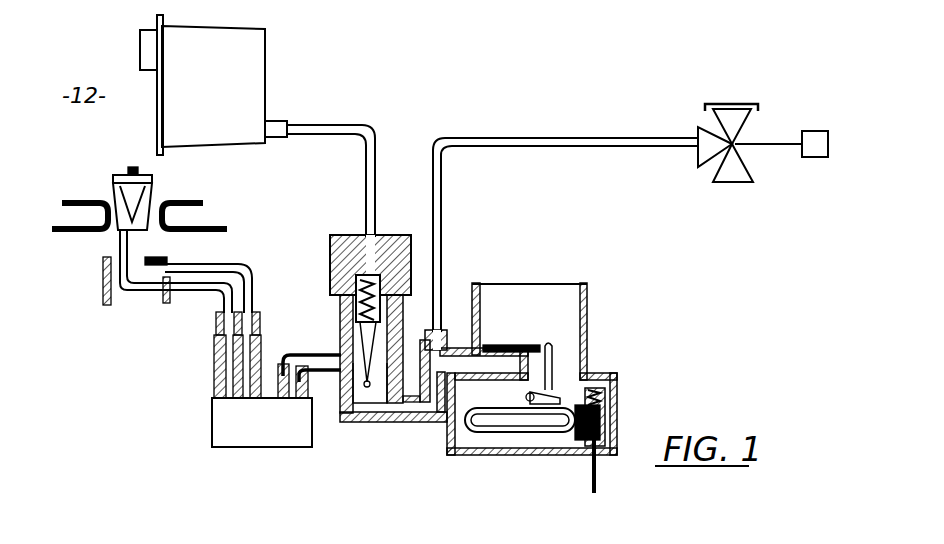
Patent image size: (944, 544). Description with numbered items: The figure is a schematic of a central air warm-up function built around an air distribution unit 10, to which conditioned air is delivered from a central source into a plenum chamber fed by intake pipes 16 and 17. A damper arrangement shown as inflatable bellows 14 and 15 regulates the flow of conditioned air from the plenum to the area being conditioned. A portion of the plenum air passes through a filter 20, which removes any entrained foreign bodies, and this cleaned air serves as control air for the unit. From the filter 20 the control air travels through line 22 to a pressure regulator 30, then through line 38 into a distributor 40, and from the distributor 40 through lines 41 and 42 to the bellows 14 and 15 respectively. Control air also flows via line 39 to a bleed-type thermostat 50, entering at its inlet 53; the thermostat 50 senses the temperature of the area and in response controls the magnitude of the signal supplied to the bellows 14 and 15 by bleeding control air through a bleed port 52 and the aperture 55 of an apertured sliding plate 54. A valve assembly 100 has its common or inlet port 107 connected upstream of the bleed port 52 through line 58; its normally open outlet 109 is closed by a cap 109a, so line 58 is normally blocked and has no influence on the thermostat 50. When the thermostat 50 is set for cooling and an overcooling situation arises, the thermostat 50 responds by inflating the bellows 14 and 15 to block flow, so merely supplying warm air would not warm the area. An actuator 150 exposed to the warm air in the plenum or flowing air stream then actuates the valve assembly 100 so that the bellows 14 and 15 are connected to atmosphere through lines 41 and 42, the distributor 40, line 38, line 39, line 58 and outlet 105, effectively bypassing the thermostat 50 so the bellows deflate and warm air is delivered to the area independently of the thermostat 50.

The air distribution unit 10 is at (160, 383).
The inflatable bellows 14 is at (107, 248).
The inflatable bellows 15 is at (155, 246).
The intake pipe 16 is at (86, 197).
The intake pipe 17 is at (186, 200).
The filter 20 is at (268, 42).
The line 22 is at (333, 120).
The pressure regulator 30 is at (392, 235).
The line 38 is at (318, 374).
The line 39 is at (412, 424).
The distributor 40 is at (250, 448).
The line 41 is at (200, 300).
The line 42 is at (230, 262).
The bleed-type thermostat 50 is at (588, 300).
The bleed port 52 is at (535, 356).
The inlet port 53 is at (460, 356).
The apertured sliding plate 54 is at (500, 342).
The aperture 55 is at (503, 343).
The line 58 is at (500, 140).
The valve assembly 100 is at (743, 131).
The outlet 105 is at (738, 186).
The common or inlet port 107 is at (703, 168).
The normally open outlet 109 is at (750, 125).
The cap 109a is at (742, 100).
The actuator 150 is at (815, 130).